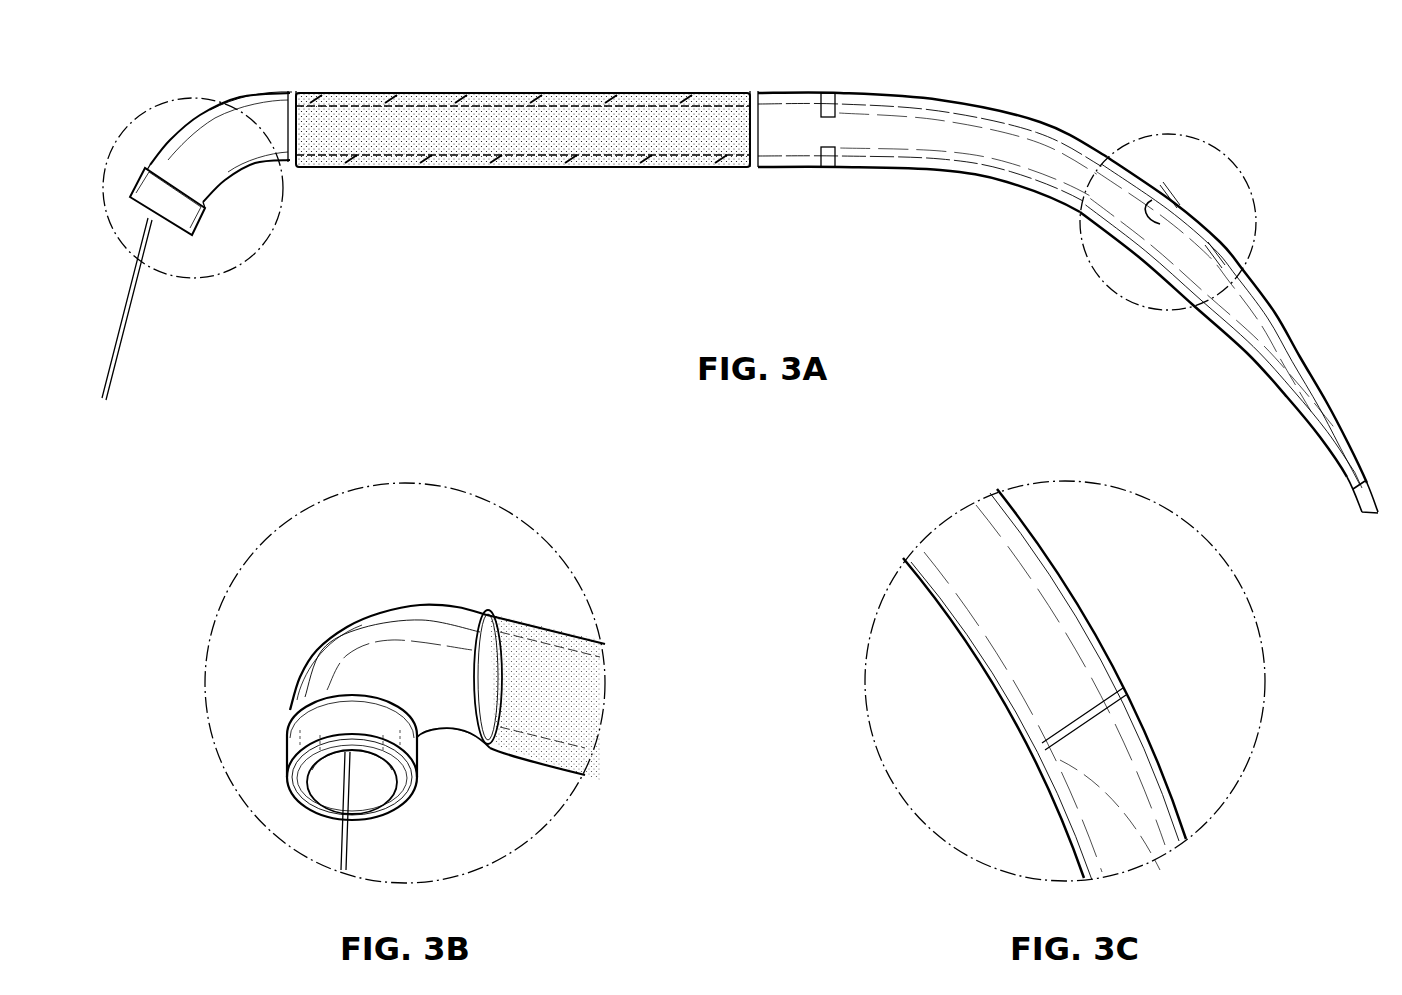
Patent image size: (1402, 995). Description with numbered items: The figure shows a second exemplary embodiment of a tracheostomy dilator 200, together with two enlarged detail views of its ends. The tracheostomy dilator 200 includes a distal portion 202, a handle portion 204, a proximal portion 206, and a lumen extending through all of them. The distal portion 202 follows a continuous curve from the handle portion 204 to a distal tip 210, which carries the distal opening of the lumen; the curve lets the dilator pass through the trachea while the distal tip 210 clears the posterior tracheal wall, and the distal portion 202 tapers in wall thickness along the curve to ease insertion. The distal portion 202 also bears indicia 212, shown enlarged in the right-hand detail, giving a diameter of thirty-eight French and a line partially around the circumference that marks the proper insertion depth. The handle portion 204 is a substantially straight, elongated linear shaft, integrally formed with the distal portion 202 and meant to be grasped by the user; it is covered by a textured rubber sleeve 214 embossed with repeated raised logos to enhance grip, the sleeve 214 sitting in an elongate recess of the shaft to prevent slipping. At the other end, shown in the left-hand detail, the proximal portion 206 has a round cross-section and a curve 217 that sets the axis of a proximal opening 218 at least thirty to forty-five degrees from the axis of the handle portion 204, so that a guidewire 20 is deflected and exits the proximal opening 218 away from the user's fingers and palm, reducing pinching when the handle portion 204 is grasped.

In FIG. 3A, the tracheostomy dilator 200 is at (1089, 107).
In FIG. 3A, the distal portion 202 is at (1268, 305).
In FIG. 3C, the distal portion 202 is at (1115, 660).
In FIG. 3A, the handle portion 204 is at (527, 104).
In FIG. 3B, the handle portion 204 is at (530, 628).
In FIG. 3A, the proximal portion 206 is at (158, 140).
In FIG. 3B, the proximal portion 206 is at (385, 612).
In FIG. 3A, the distal tip 210 is at (1375, 492).
In FIG. 3A, the indicia 212 is at (1187, 208).
In FIG. 3C, the indicia 212 is at (1020, 712).
In FIG. 3A, the textured rubber sleeve 214 is at (647, 112).
In FIG. 3A, the curve 217 is at (178, 118).
In FIG. 3B, the curve 217 is at (318, 653).
In FIG. 3A, the proximal opening 218 is at (140, 228).
In FIG. 3B, the proximal opening 218 is at (317, 790).
In FIG. 3A, the guidewire 20 is at (128, 293).
In FIG. 3B, the guidewire 20 is at (347, 840).